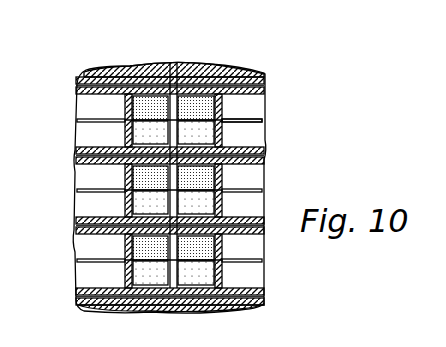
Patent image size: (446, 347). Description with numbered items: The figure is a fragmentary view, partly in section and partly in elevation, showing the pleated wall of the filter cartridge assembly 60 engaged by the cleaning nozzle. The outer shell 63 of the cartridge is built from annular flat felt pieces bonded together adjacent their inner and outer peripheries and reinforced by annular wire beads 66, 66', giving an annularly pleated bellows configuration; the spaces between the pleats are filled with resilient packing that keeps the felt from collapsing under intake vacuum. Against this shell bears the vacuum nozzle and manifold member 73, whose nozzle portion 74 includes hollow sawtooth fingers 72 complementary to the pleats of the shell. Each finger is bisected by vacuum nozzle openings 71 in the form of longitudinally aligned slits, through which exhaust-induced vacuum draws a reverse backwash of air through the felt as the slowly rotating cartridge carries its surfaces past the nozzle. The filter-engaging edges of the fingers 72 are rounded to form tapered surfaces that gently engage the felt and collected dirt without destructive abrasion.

The filter cartridge assembly 60 is at (268, 100).
The outer shell 63 is at (108, 76).
The annular wire bead 66 is at (170, 212).
The annular wire bead 66' is at (172, 202).
The vacuum nozzle openings 71 is at (174, 72).
The hollow sawtooth fingers 72 is at (124, 114).
The vacuum nozzle and manifold member 73 is at (122, 256).
The nozzle portion 74 is at (236, 124).